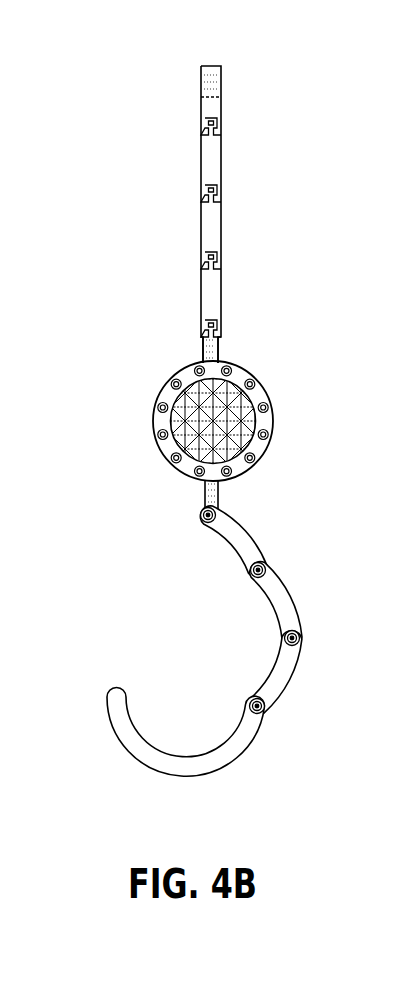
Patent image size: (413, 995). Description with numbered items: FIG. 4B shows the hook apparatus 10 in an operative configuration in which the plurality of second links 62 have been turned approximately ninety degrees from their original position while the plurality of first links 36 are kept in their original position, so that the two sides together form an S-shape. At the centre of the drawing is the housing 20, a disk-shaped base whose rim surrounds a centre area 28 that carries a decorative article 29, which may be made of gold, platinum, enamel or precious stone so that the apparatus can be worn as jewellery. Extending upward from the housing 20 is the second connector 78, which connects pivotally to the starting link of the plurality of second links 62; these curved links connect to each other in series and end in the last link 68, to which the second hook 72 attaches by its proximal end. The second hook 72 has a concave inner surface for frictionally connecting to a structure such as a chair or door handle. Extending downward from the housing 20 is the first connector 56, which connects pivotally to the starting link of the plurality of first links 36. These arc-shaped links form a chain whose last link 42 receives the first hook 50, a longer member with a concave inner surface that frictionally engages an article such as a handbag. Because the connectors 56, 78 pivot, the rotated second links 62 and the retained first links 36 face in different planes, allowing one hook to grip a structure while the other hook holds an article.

The hook apparatus 10 is at (110, 56).
The housing 20 is at (258, 395).
The centre area 28 is at (180, 420).
The decorative article 29 is at (238, 440).
The plurality of first links 36 is at (287, 612).
The last link 42 is at (287, 672).
The first hook 50 is at (150, 760).
The first connector 56 is at (203, 497).
The plurality of second links 62 is at (203, 236).
The last link 68 is at (208, 165).
The second hook 72 is at (213, 92).
The second connector 78 is at (205, 348).